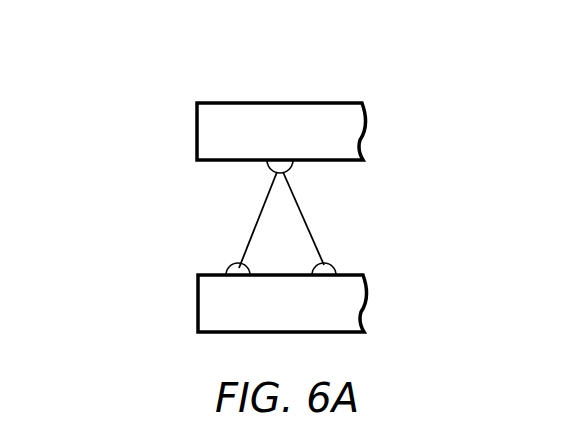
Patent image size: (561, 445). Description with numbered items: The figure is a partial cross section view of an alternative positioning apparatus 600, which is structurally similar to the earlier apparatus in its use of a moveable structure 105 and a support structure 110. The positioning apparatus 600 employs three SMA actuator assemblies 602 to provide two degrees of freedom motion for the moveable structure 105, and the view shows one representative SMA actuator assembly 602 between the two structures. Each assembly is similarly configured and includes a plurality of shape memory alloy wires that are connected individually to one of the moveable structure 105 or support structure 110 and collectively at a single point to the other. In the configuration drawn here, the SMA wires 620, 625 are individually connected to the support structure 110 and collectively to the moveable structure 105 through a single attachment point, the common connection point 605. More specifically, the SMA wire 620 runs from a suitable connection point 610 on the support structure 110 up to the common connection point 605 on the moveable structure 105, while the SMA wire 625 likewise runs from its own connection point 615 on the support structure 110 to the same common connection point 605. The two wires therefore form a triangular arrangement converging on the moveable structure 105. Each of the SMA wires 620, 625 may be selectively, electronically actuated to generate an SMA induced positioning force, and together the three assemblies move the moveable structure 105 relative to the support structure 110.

The positioning apparatus 600 is at (337, 85).
The SMA actuator assembly 602 is at (172, 158).
The moveable structure 105 is at (299, 142).
The support structure 110 is at (303, 318).
The common connection point 605 is at (270, 167).
The connection point 610 is at (229, 270).
The connection point 615 is at (333, 270).
The SMA wire 620 is at (256, 222).
The SMA wire 625 is at (307, 218).